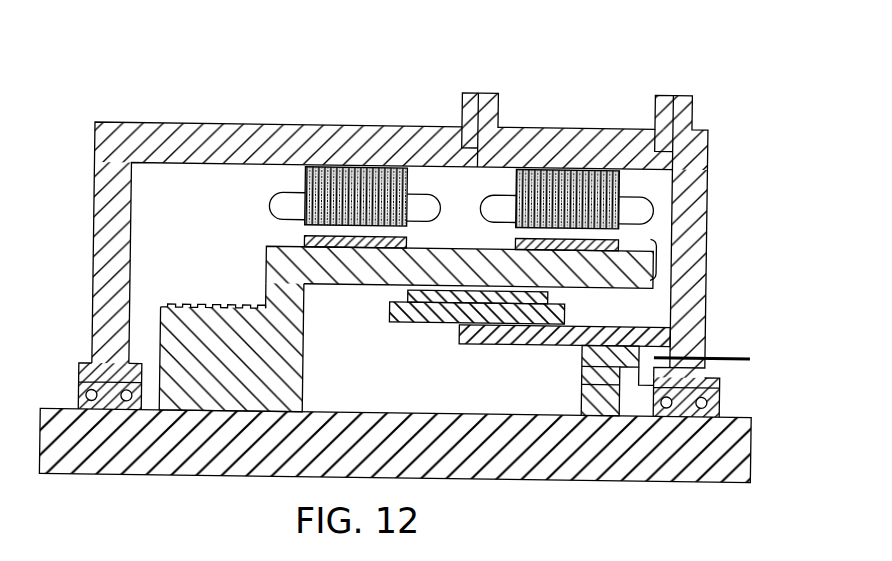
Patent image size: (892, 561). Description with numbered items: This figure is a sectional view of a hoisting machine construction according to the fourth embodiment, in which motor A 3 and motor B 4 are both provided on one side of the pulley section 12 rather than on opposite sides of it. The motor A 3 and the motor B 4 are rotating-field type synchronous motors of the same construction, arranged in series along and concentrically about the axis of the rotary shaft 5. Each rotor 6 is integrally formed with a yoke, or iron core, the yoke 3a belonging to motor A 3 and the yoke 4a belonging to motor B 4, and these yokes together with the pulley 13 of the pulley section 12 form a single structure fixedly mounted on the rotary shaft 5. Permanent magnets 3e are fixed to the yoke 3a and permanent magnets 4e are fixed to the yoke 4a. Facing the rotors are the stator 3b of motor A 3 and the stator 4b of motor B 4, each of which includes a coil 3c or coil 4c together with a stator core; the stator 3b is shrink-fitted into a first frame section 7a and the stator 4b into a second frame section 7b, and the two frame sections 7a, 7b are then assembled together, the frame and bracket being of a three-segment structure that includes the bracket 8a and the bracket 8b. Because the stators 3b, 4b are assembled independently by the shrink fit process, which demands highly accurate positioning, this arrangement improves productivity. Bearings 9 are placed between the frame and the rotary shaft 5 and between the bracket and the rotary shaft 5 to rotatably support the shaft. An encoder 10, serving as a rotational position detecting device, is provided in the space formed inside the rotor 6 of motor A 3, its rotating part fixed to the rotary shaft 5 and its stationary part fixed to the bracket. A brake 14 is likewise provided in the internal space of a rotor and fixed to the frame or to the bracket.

The motor A 3 is at (324, 135).
The yoke 3a is at (372, 282).
The stator 3b is at (306, 176).
The coil 3c is at (268, 203).
The permanent magnets 3e is at (306, 239).
The motor B 4 is at (551, 134).
The yoke 4a is at (594, 286).
The stator 4b is at (517, 174).
The coil 4c is at (483, 190).
The permanent magnets 4e is at (517, 232).
The rotary shaft 5 is at (704, 459).
The rotor 6 is at (660, 261).
The first frame section 7a is at (252, 121).
The second frame section 7b is at (555, 121).
The bracket 8a is at (95, 237).
The bracket 8b is at (708, 206).
The bearings 9 is at (82, 387).
The encoder 10 is at (588, 394).
The pulley section 12 is at (267, 60).
The pulley 13 is at (215, 305).
The brake 14 is at (415, 320).